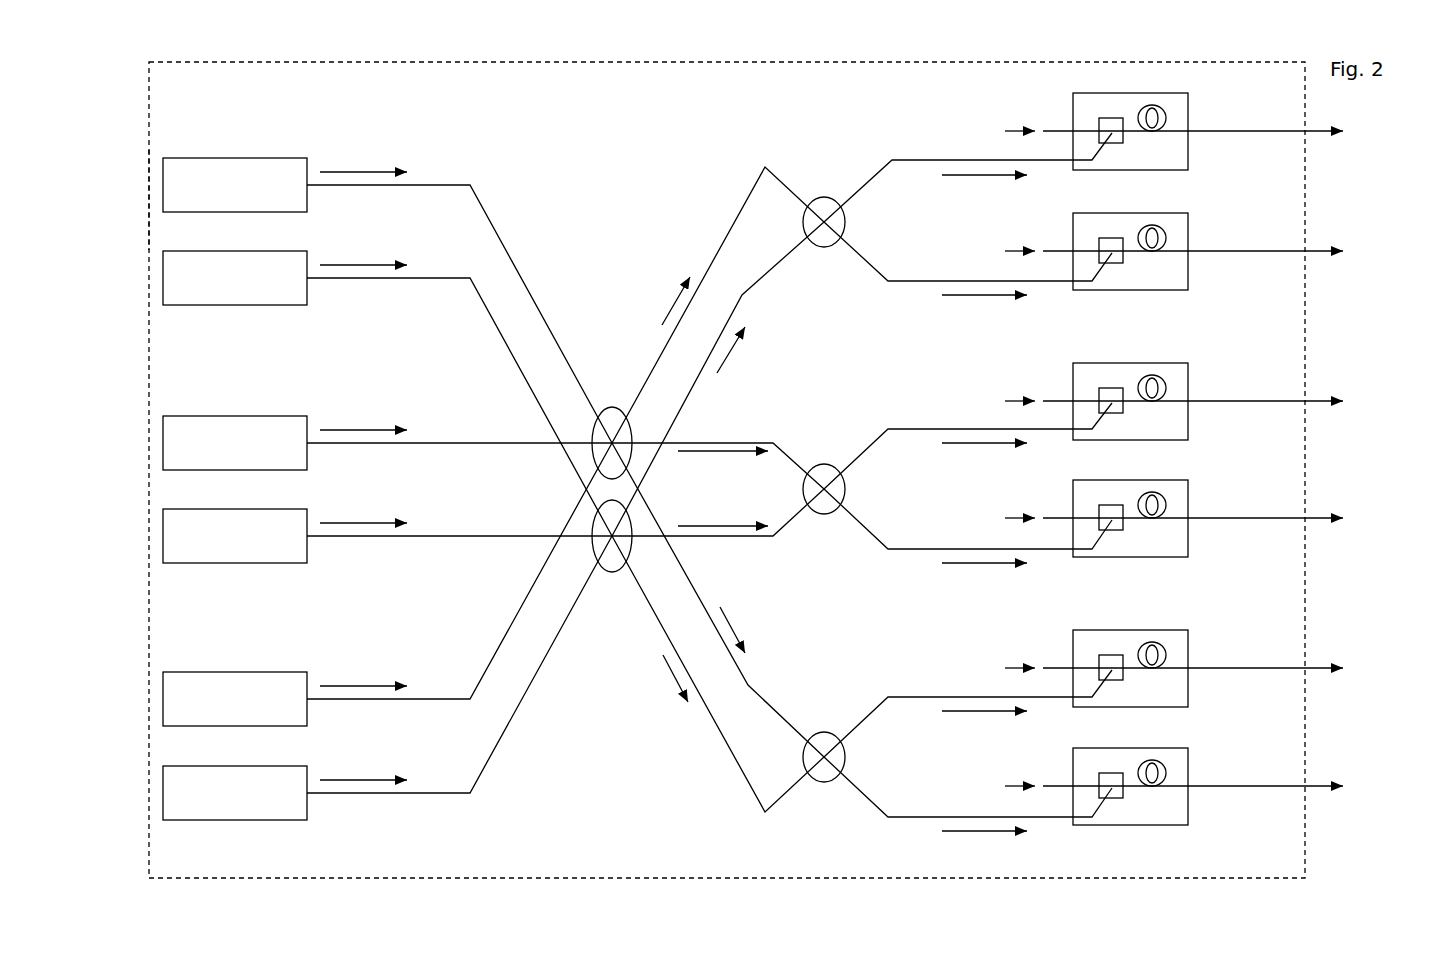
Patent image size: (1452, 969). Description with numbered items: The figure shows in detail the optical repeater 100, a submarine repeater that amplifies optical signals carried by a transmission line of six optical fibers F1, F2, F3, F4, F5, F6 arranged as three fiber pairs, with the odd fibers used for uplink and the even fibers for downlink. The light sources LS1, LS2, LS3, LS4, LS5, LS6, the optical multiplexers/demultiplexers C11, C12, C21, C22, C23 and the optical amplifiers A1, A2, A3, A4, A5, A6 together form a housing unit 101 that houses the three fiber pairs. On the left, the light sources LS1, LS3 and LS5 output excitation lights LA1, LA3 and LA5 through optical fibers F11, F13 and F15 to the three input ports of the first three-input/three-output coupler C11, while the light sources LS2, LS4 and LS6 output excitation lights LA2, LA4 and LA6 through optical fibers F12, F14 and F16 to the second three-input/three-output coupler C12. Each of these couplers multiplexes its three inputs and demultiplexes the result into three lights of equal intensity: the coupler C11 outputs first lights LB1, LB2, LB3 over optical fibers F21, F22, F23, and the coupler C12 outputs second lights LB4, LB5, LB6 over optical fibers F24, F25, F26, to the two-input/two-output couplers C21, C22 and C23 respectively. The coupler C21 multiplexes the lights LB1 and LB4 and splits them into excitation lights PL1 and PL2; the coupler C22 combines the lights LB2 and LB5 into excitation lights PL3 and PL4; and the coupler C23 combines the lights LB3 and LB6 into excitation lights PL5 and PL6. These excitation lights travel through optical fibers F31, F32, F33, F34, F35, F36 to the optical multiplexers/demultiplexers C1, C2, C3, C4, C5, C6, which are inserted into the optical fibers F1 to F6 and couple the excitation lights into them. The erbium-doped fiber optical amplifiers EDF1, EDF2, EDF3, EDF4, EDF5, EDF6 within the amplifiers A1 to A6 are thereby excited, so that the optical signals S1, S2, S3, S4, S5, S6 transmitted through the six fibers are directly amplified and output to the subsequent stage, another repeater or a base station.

The optical repeater 100 is at (130, 115).
The housing unit 101 is at (148, 197).
The light source LS1 is at (200, 158).
The light source LS2 is at (282, 306).
The light source LS3 is at (200, 416).
The light source LS4 is at (282, 564).
The light source LS5 is at (200, 672).
The light source LS6 is at (282, 821).
The light LA1 is at (363, 158).
The light LA2 is at (363, 251).
The light LA3 is at (363, 416).
The light LA4 is at (363, 509).
The light LA5 is at (363, 672).
The light LA6 is at (363, 766).
The optical fiber F11 is at (441, 184).
The optical fiber F12 is at (441, 277).
The optical fiber F13 is at (441, 442).
The optical fiber F14 is at (441, 535).
The optical fiber F15 is at (441, 698).
The optical fiber F16 is at (441, 792).
The optical multiplexer/demultiplexer C11 is at (612, 406).
The optical multiplexer/demultiplexer C12 is at (612, 572).
The optical fiber F21 is at (715, 255).
The optical fiber F22 is at (748, 442).
The optical fiber F23 is at (755, 675).
The optical fiber F24 is at (752, 300).
The optical fiber F25 is at (748, 537).
The optical fiber F26 is at (714, 726).
The light LB1 is at (657, 301).
The light LB2 is at (723, 466).
The light LB3 is at (751, 630).
The light LB4 is at (750, 351).
The light LB5 is at (723, 512).
The light LB6 is at (656, 678).
The optical multiplexer/demultiplexer C21 is at (824, 196).
The optical multiplexer/demultiplexer C22 is at (824, 463).
The optical multiplexer/demultiplexer C23 is at (824, 784).
The optical fiber F31 is at (893, 158).
The optical fiber F32 is at (891, 283).
The optical fiber F33 is at (893, 427).
The optical fiber F34 is at (891, 551).
The optical fiber F35 is at (893, 695).
The optical fiber F36 is at (891, 819).
The excitation light PL1 is at (984, 192).
The excitation light PL2 is at (984, 312).
The excitation light PL3 is at (984, 460).
The excitation light PL4 is at (984, 580).
The excitation light PL5 is at (984, 728).
The excitation light PL6 is at (984, 848).
The optical signal S1 is at (1176, 135).
The optical signal S2 is at (1176, 255).
The optical signal S3 is at (1176, 405).
The optical signal S4 is at (1176, 522).
The optical signal S5 is at (1176, 672).
The optical signal S6 is at (1176, 790).
The erbium-doped fiber optical amplifier EDF1 is at (1158, 105).
The erbium-doped fiber optical amplifier EDF2 is at (1158, 225).
The erbium-doped fiber optical amplifier EDF3 is at (1158, 375).
The erbium-doped fiber optical amplifier EDF4 is at (1158, 492).
The erbium-doped fiber optical amplifier EDF5 is at (1158, 642).
The erbium-doped fiber optical amplifier EDF6 is at (1158, 760).
The optical fiber F1 is at (1270, 129).
The optical fiber F2 is at (1270, 249).
The optical fiber F3 is at (1270, 399).
The optical fiber F4 is at (1270, 516).
The optical fiber F5 is at (1270, 666).
The optical fiber F6 is at (1270, 784).
The optical amplifier A1 is at (1188, 151).
The optical amplifier A2 is at (1188, 271).
The optical amplifier A3 is at (1188, 421).
The optical amplifier A4 is at (1188, 538).
The optical amplifier A5 is at (1188, 688).
The optical amplifier A6 is at (1188, 806).
The optical multiplexer/demultiplexer C1 is at (1116, 144).
The optical multiplexer/demultiplexer C2 is at (1116, 264).
The optical multiplexer/demultiplexer C3 is at (1116, 414).
The optical multiplexer/demultiplexer C4 is at (1116, 531).
The optical multiplexer/demultiplexer C5 is at (1116, 681).
The optical multiplexer/demultiplexer C6 is at (1116, 799).